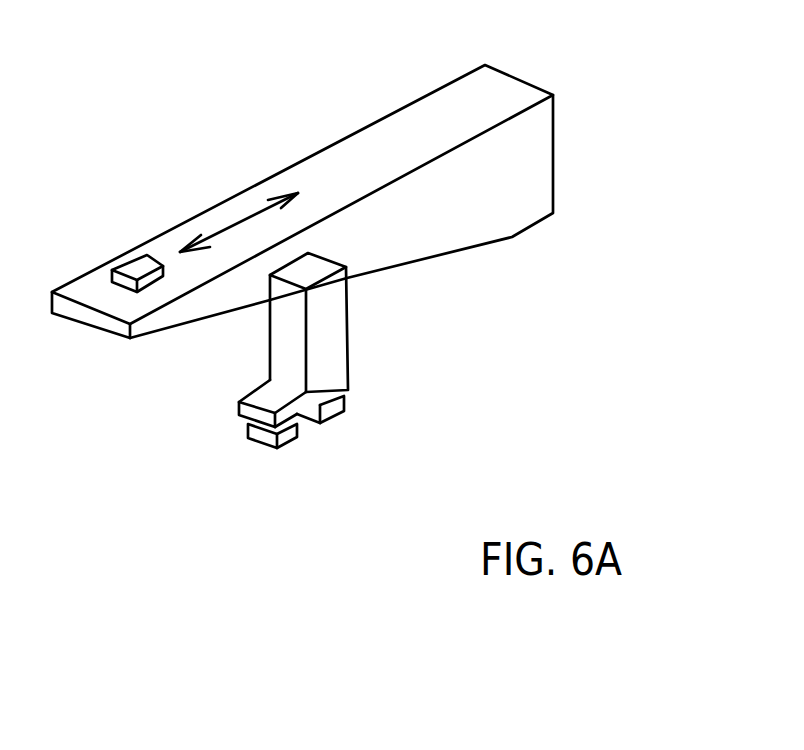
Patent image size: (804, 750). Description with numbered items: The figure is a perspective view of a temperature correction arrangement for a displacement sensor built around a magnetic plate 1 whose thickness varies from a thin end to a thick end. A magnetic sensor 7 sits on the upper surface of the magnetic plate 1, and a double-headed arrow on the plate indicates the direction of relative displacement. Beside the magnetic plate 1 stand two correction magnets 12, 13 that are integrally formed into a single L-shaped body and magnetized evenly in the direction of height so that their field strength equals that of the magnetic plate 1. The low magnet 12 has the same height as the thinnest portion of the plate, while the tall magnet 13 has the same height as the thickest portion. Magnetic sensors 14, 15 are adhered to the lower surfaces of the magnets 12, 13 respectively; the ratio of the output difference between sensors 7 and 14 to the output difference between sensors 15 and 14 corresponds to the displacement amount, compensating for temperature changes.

The magnetic plate 1 is at (513, 84).
The magnetic sensor 7 is at (137, 262).
The magnet 12 is at (257, 390).
The magnet 13 is at (350, 315).
The magnetic sensor 14 is at (262, 443).
The magnetic sensor 15 is at (348, 405).